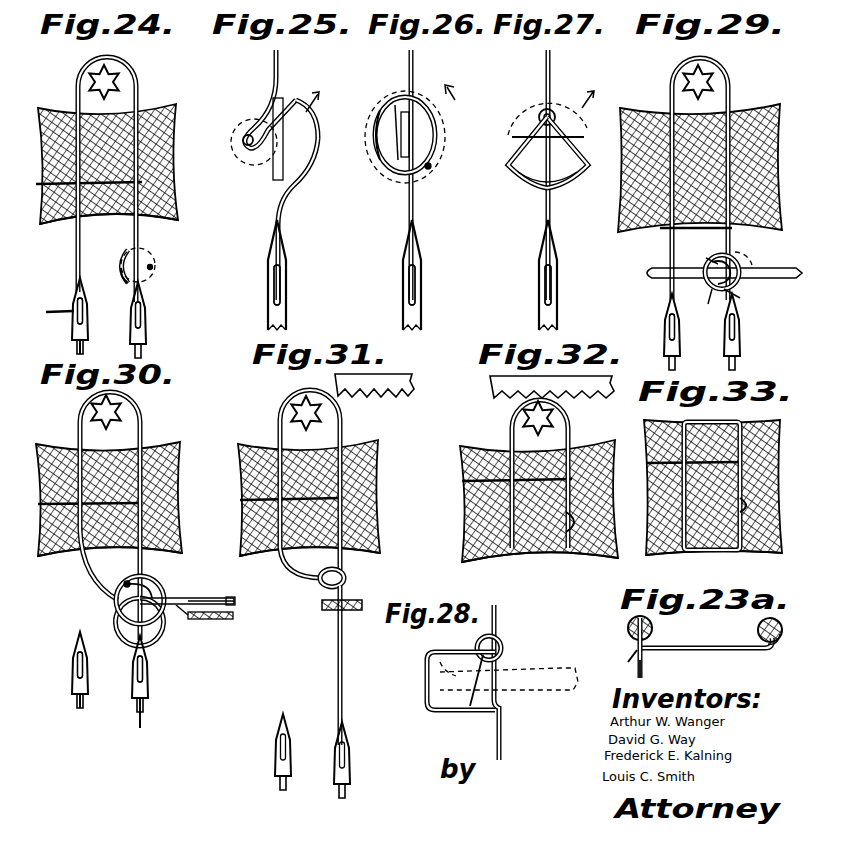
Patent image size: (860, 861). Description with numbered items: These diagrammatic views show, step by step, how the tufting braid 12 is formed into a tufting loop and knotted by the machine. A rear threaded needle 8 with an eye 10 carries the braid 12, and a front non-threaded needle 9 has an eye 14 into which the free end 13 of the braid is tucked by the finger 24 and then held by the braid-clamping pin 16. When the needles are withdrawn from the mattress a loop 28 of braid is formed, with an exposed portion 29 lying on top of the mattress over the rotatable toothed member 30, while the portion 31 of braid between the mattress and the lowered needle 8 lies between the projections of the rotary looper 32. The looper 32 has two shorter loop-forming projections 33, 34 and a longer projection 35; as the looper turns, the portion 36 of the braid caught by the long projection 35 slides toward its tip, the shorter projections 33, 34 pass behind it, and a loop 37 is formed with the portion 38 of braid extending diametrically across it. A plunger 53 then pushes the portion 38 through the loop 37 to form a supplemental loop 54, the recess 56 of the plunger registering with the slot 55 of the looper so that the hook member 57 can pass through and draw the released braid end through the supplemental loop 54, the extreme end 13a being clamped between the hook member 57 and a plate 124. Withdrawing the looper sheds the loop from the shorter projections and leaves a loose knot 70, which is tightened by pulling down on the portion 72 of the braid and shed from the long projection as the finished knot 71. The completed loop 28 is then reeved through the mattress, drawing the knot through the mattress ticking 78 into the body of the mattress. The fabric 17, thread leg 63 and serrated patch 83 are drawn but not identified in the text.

In FIG. 24, the rear threaded needle 8 is at (147, 332).
In FIG. 25, the rear threaded needle 8 is at (290, 265).
In FIG. 26, the rear threaded needle 8 is at (422, 260).
In FIG. 27, the rear threaded needle 8 is at (556, 308).
In FIG. 29, the rear threaded needle 8 is at (744, 347).
In FIG. 30, the rear threaded needle 8 is at (149, 692).
In FIG. 31, the rear threaded needle 8 is at (350, 766).
In FIG. 23A, the rear threaded needle 8 is at (783, 630).
In FIG. 24, the front non-threaded needle 9 is at (72, 338).
In FIG. 29, the front non-threaded needle 9 is at (662, 346).
In FIG. 30, the front non-threaded needle 9 is at (72, 685).
In FIG. 31, the front non-threaded needle 9 is at (276, 745).
In FIG. 23A, the front non-threaded needle 9 is at (628, 626).
In FIG. 24, the eye 10 is at (144, 316).
In FIG. 25, the eye 10 is at (281, 293).
In FIG. 26, the eye 10 is at (416, 293).
In FIG. 27, the eye 10 is at (544, 293).
In FIG. 29, the eye 10 is at (740, 334).
In FIG. 30, the eye 10 is at (146, 668).
In FIG. 23A, the eye 10 is at (778, 644).
In FIG. 30, the tufting tape or braid 12 is at (147, 716).
In FIG. 30, the free end 13 is at (176, 608).
In FIG. 23A, the free end 13 is at (710, 652).
In FIG. 30, the extreme end 13a is at (200, 621).
In FIG. 24, the eye 14 is at (74, 308).
In FIG. 29, the eye 14 is at (678, 342).
In FIG. 30, the eye 14 is at (74, 664).
In FIG. 23A, the eye 14 is at (632, 645).
In FIG. 24, the braid-clamping pin 16 is at (86, 348).
In FIG. 30, the braid-clamping pin 16 is at (77, 708).
In FIG. 24, the fabric 17 is at (50, 108).
In FIG. 29, the fabric 17 is at (648, 108).
In FIG. 30, the fabric 17 is at (44, 454).
In FIG. 31, the fabric 17 is at (242, 462).
In FIG. 32, the fabric 17 is at (472, 450).
In FIG. 33, the fabric 17 is at (650, 422).
In FIG. 23A, the finger 24 is at (646, 672).
In FIG. 24, the loop 28 is at (38, 184).
In FIG. 29, the loop 28 is at (728, 229).
In FIG. 30, the loop 28 is at (40, 505).
In FIG. 31, the loop 28 is at (242, 501).
In FIG. 32, the loop 28 is at (464, 482).
In FIG. 33, the loop 28 is at (648, 463).
In FIG. 24, the exposed portion 29 is at (140, 94).
In FIG. 29, the exposed portion 29 is at (732, 100).
In FIG. 24, the rotatable toothed member 30 is at (118, 74).
In FIG. 29, the rotatable toothed member 30 is at (714, 78).
In FIG. 30, the rotatable toothed member 30 is at (90, 416).
In FIG. 31, the rotatable toothed member 30 is at (322, 416).
In FIG. 32, the rotatable toothed member 30 is at (522, 412).
In FIG. 24, the portion of braid 31 is at (141, 238).
In FIG. 30, the portion of braid 31 is at (142, 432).
In FIG. 31, the portion of braid 31 is at (343, 432).
In FIG. 32, the portion of braid 31 is at (570, 434).
In FIG. 24, the rotary looper 32 is at (153, 260).
In FIG. 25, the rotary looper 32 is at (248, 165).
In FIG. 26, the rotary looper 32 is at (400, 182).
In FIG. 29, the rotary looper 32 is at (748, 260).
In FIG. 24, the loop-forming projection 33 is at (122, 253).
In FIG. 25, the loop-forming projection 33 is at (314, 120).
In FIG. 26, the loop-forming projection 33 is at (376, 135).
In FIG. 27, the loop-forming projection 33 is at (574, 182).
In FIG. 29, the loop-forming projection 33 is at (710, 306).
In FIG. 24, the loop-forming projection 34 is at (124, 284).
In FIG. 25, the loop-forming projection 34 is at (312, 166).
In FIG. 26, the loop-forming projection 34 is at (390, 104).
In FIG. 27, the loop-forming projection 34 is at (526, 181).
In FIG. 29, the loop-forming projection 34 is at (742, 298).
In FIG. 30, the loop-forming projection 34 is at (168, 598).
In FIG. 24, the long projection 35 is at (154, 268).
In FIG. 25, the long projection 35 is at (243, 137).
In FIG. 26, the long projection 35 is at (431, 168).
In FIG. 27, the long projection 35 is at (552, 110).
In FIG. 30, the long projection 35 is at (124, 580).
In FIG. 25, the portion of braid 36 is at (250, 118).
In FIG. 26, the portion of braid 36 is at (418, 96).
In FIG. 26, the loop 37 is at (395, 110).
In FIG. 27, the loop 37 is at (520, 172).
In FIG. 29, the loop 37 is at (708, 262).
In FIG. 30, the loop 37 is at (152, 590).
In FIG. 28, the loop 37 is at (500, 674).
In FIG. 27, the portion of braid 38 is at (585, 137).
In FIG. 28, the plunger 53 is at (571, 667).
In FIG. 28, the supplemental loop 54 is at (428, 688).
In FIG. 25, the slot 55 is at (272, 172).
In FIG. 26, the slot 55 is at (432, 138).
In FIG. 27, the slot 55 is at (520, 122).
In FIG. 29, the slot 55 is at (712, 286).
In FIG. 29, the recess 56 is at (742, 282).
In FIG. 28, the recess 56 is at (470, 678).
In FIG. 29, the hook member 57 is at (797, 269).
In FIG. 30, the hook member 57 is at (236, 598).
In FIG. 29, the thread leg 63 is at (668, 291).
In FIG. 30, the loose knot 70 is at (104, 612).
In FIG. 31, the knot 71 is at (348, 580).
In FIG. 32, the knot 71 is at (584, 516).
In FIG. 33, the knot 71 is at (756, 503).
In FIG. 31, the portion of braid 72 is at (344, 642).
In FIG. 24, the mattress ticking 78 is at (47, 223).
In FIG. 30, the mattress ticking 78 is at (52, 560).
In FIG. 31, the mattress ticking 78 is at (362, 557).
In FIG. 32, the mattress ticking 78 is at (500, 560).
In FIG. 33, the mattress ticking 78 is at (672, 557).
In FIG. 31, the serrated patch 83 is at (380, 462).
In FIG. 30, the plate 124 is at (240, 608).